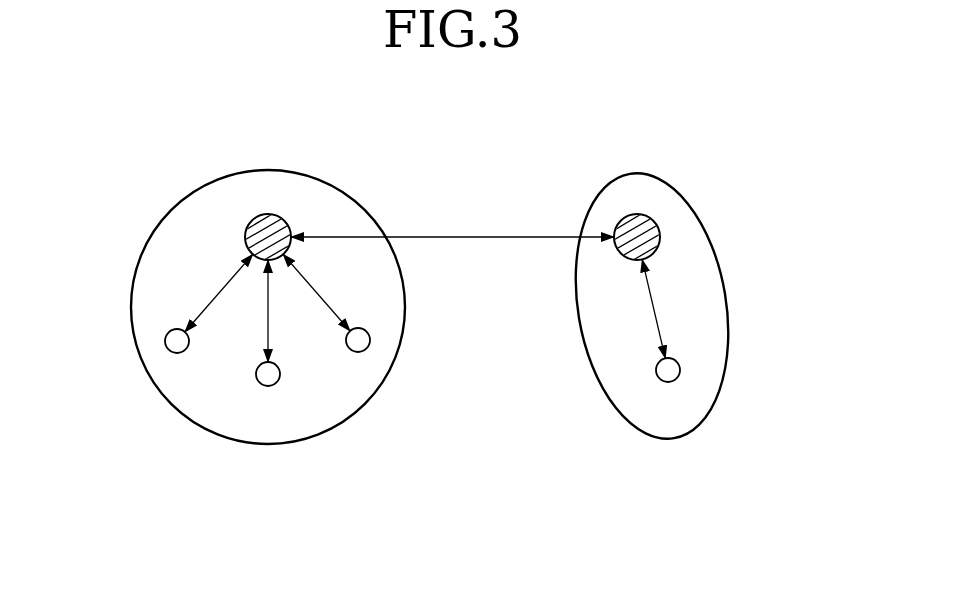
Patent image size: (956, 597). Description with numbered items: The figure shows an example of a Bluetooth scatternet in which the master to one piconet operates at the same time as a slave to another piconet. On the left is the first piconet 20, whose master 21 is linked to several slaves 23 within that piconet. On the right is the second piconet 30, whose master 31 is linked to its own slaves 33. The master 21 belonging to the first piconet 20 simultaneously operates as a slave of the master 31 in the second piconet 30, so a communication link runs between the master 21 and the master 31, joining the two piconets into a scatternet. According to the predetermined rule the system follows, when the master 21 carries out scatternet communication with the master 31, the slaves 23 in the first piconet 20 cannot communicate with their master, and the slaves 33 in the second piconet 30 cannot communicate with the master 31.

The first piconet 20 is at (268, 447).
The master 21 is at (270, 214).
The slaves 23 is at (168, 348).
The second piconet 30 is at (658, 437).
The master 31 is at (643, 214).
The slaves 33 is at (674, 358).